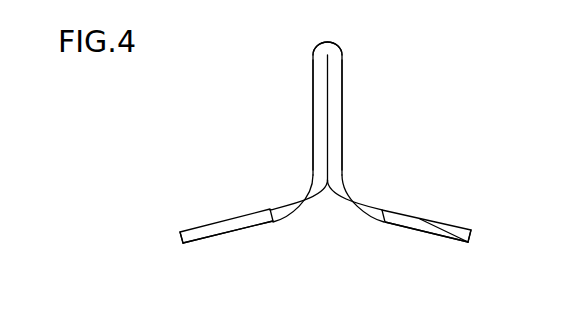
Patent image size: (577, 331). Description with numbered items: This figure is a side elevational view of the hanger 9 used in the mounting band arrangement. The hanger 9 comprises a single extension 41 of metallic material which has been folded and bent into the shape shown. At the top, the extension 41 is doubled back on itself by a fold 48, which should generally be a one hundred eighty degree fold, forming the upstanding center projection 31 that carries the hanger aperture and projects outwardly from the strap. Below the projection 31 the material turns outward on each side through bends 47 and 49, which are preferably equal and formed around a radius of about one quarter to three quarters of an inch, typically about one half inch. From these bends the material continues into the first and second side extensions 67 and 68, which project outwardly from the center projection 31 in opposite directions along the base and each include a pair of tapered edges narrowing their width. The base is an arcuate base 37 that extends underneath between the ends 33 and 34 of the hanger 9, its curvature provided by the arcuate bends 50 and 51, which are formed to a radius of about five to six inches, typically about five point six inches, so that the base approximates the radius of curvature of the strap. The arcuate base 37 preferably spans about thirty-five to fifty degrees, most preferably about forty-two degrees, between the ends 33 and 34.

The hanger 9 is at (270, 143).
The fold 48 is at (321, 42).
The projection 31 is at (312, 88).
The extension 41 is at (343, 88).
The bend 49 is at (303, 195).
The bend 47 is at (350, 195).
The second side extension 68 is at (233, 216).
The arcuate bend 50 is at (226, 233).
The end 33 is at (180, 238).
The first side extension 67 is at (421, 214).
The arcuate bend 51 is at (395, 226).
The arcuate base 37 is at (450, 239).
The end 34 is at (471, 236).